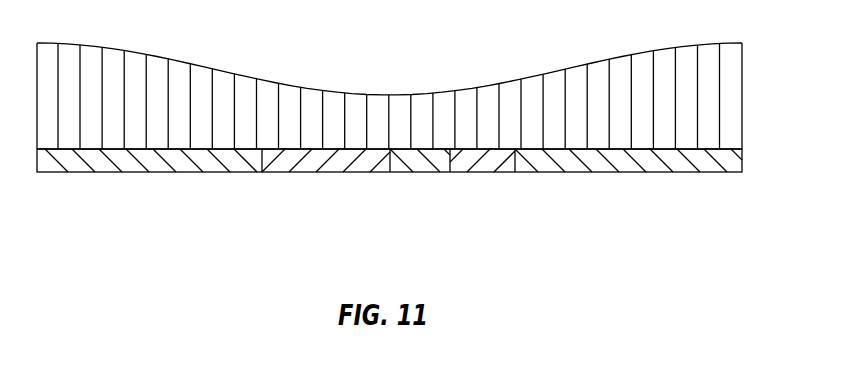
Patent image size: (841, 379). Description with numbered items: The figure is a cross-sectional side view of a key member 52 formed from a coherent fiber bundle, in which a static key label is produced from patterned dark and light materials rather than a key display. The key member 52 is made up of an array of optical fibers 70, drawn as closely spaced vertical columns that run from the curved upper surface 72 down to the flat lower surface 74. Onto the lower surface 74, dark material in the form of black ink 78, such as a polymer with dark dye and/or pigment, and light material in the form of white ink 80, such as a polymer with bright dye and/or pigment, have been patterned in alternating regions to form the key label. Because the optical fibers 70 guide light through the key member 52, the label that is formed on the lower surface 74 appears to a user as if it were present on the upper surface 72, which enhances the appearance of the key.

The key member 52 is at (423, 77).
The fibers 70 is at (530, 80).
The upper surface 72 is at (378, 92).
The lower surface 74 is at (63, 150).
The black ink 78 is at (158, 173).
The white ink 80 is at (330, 173).